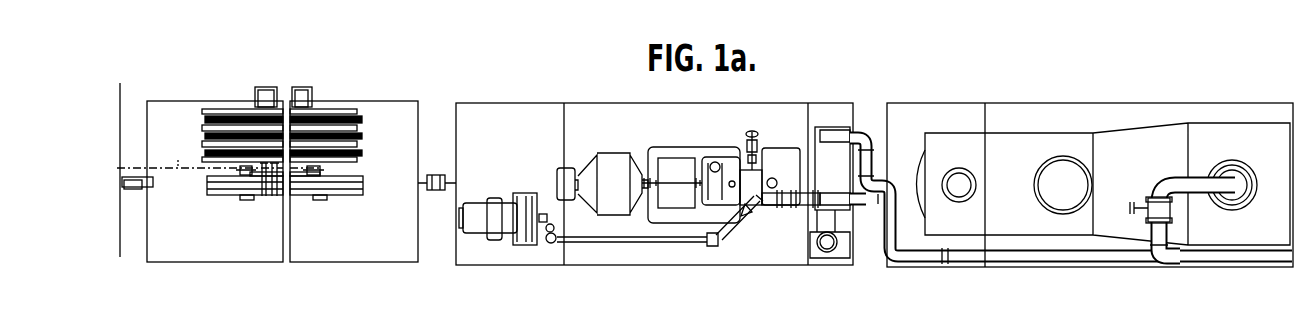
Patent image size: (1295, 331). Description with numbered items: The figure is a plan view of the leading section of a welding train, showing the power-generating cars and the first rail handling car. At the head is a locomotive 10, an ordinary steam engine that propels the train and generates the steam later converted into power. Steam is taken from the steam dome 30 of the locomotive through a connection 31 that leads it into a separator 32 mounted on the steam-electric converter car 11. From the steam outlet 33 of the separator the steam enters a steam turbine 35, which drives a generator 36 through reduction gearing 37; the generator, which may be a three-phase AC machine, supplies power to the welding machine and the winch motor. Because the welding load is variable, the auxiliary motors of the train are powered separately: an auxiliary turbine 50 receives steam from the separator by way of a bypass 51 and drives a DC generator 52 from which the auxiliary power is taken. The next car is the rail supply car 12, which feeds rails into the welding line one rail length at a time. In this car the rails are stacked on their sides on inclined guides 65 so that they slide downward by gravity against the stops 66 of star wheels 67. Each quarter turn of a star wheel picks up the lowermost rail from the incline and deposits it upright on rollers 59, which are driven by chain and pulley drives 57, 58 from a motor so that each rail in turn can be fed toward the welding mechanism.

The locomotive 10 is at (1233, 238).
The steam-electric converter car 11 is at (762, 253).
The rail supply car 12 is at (373, 252).
The steam dome 30 is at (1246, 170).
The connection 31 is at (1200, 182).
The separator 32 is at (819, 133).
The steam outlet 33 is at (853, 210).
The steam turbine 35 is at (783, 153).
The generator 36 is at (612, 165).
The reduction gearing 37 is at (715, 162).
The auxiliary turbine 50 is at (520, 197).
The bypass 51 is at (648, 243).
The DC generator 52 is at (478, 208).
The chain and pulley drive 57 is at (299, 231).
The chain and pulley drive 58 is at (247, 200).
The rollers 59 is at (238, 192).
The inclined guides 65 is at (262, 87).
The stops 66 is at (265, 197).
The star wheels 67 is at (276, 197).